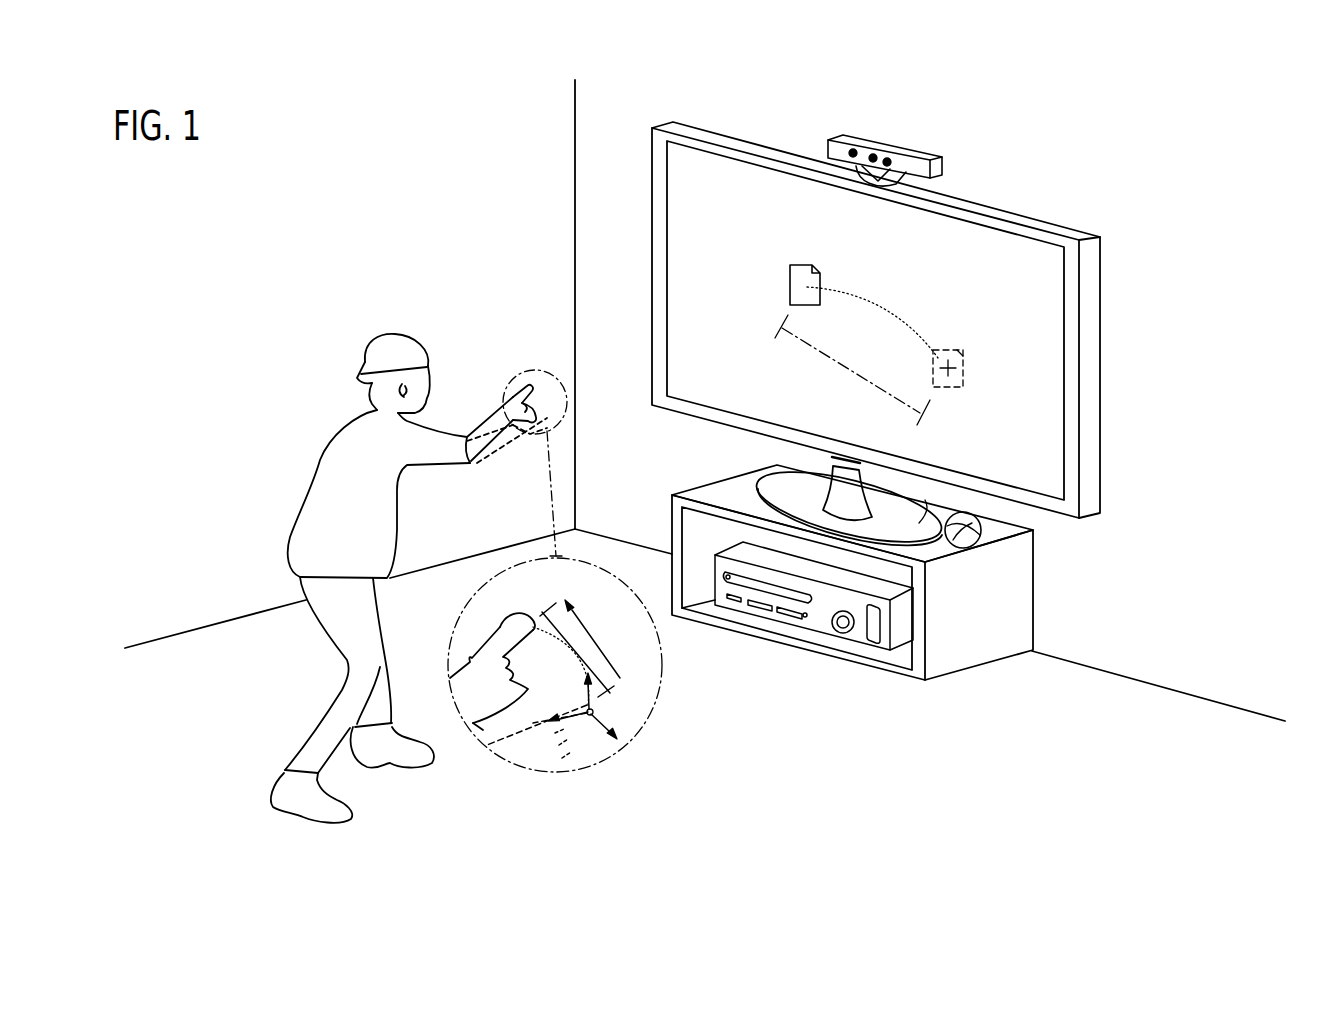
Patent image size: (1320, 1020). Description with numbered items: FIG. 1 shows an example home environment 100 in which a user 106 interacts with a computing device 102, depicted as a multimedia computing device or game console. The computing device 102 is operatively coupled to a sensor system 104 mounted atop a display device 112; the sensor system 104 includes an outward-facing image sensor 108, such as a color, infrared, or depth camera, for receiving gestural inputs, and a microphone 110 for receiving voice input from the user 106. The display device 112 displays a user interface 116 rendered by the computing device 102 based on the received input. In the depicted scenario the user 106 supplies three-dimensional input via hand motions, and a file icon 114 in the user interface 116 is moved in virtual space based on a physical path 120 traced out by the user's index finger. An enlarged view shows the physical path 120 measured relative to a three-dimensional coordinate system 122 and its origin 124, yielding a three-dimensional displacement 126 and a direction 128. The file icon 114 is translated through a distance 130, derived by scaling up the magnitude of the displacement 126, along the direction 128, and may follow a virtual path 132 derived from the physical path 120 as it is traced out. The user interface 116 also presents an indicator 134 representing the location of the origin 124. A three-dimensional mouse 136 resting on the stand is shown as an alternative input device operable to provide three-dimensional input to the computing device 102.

The environment 100 is at (971, 104).
The computing device 102 is at (820, 632).
The sensor system 104 is at (940, 161).
The user 106 is at (293, 531).
The outward-facing image sensor 108 is at (854, 150).
The microphone 110 is at (888, 158).
The display device 112 is at (1103, 430).
The file icon 114 is at (790, 265).
The user interface 116 is at (937, 228).
The physical path 120 is at (562, 642).
The three-dimensional coordinate system 122 is at (589, 740).
The origin 124 is at (594, 713).
The three-dimensional displacement 126 is at (543, 608).
The direction 128 is at (571, 598).
The distance 130 is at (918, 424).
The virtual path 132 is at (884, 315).
The indicator 134 is at (963, 377).
The three-dimensional mouse 136 is at (975, 549).